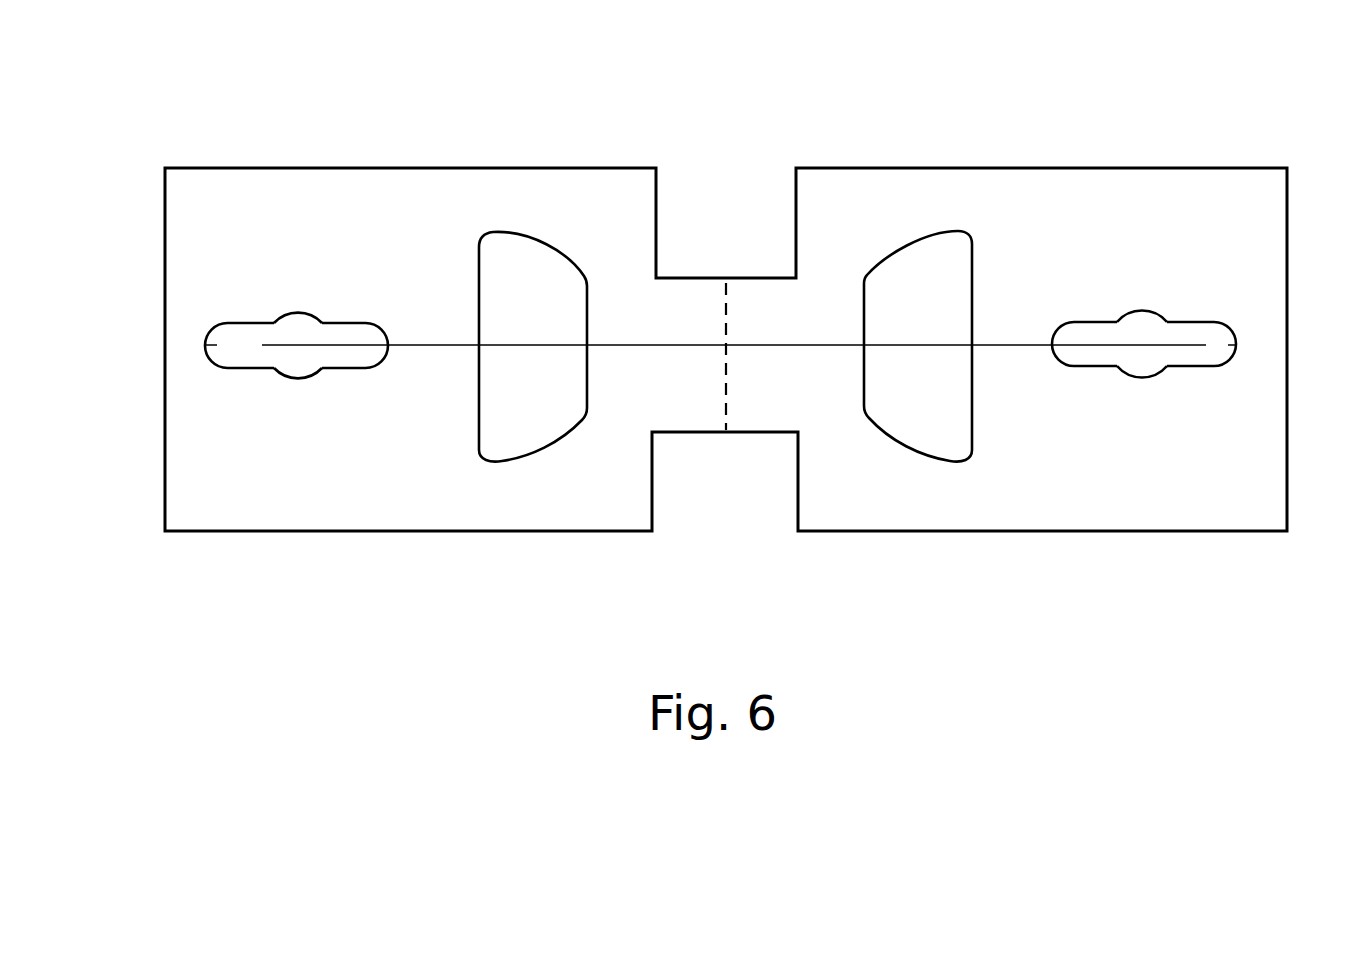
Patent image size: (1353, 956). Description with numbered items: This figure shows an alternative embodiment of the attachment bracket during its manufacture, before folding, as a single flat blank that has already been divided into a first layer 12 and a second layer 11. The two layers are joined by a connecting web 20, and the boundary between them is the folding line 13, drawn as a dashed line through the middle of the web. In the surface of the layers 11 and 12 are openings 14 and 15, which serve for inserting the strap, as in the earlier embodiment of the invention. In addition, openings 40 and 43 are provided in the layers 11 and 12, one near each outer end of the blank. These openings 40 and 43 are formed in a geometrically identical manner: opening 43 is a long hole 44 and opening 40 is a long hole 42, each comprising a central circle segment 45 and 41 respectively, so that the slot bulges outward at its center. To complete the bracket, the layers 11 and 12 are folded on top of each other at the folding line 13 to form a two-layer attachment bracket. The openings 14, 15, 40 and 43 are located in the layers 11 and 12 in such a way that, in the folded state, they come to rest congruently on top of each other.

The second layer 11 is at (580, 507).
The first layer 12 is at (1032, 507).
The folding line 13 is at (725, 298).
The opening 14 is at (515, 247).
The opening 15 is at (938, 270).
The connecting web 20 is at (780, 292).
The opening 40 is at (1083, 322).
The central circle segment 41 is at (1140, 323).
The long hole 42 is at (1233, 345).
The opening 43 is at (235, 323).
The long hole 44 is at (217, 345).
The central circle segment 45 is at (298, 330).